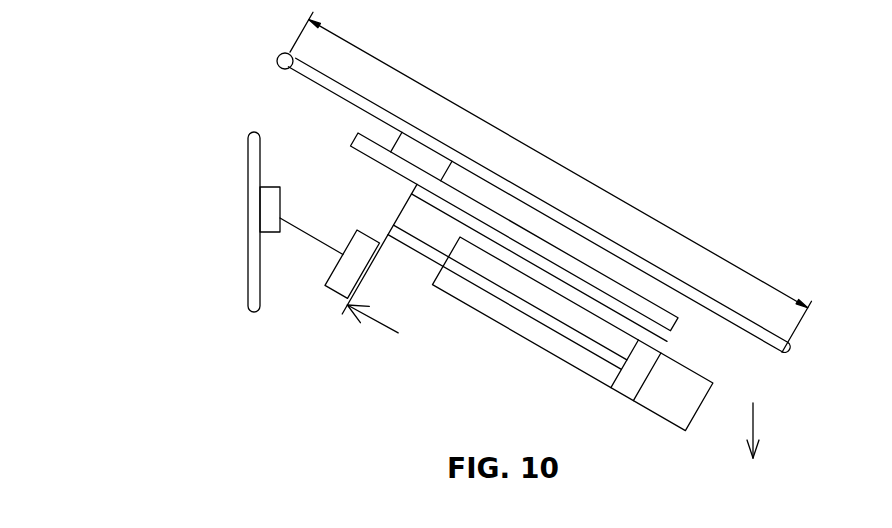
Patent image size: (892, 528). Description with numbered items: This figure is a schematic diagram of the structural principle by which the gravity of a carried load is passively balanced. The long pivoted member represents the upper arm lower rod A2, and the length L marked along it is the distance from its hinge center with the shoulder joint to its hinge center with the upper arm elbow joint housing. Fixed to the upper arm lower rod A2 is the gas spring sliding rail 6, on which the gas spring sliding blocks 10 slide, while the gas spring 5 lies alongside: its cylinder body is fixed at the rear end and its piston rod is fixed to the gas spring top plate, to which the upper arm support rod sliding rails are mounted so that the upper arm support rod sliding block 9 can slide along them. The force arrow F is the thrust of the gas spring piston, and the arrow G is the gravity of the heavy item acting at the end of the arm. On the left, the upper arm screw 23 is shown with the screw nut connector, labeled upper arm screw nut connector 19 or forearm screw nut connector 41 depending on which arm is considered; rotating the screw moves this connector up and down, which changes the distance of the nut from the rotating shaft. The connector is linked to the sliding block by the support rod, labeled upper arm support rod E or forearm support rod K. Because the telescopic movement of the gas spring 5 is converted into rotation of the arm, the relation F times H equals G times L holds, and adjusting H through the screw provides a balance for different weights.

The upper arm lower rod A2 is at (342, 88).
The distance from hinge center to hinge center L is at (551, 182).
The gas spring sliding block 10 is at (415, 150).
The gas spring sliding rail 6 is at (652, 312).
The gas spring 5 is at (562, 343).
The upper arm support rod sliding block 9 is at (347, 277).
The thrust value of the gas spring piston F is at (372, 329).
The upper arm screw 23 is at (253, 158).
The upper arm screw nut connector 19 is at (168, 211).
The forearm screw nut connector 41 is at (267, 198).
The upper arm support rod E is at (209, 267).
The forearm support rod K is at (310, 238).
The gravity of the heavy item G is at (762, 430).